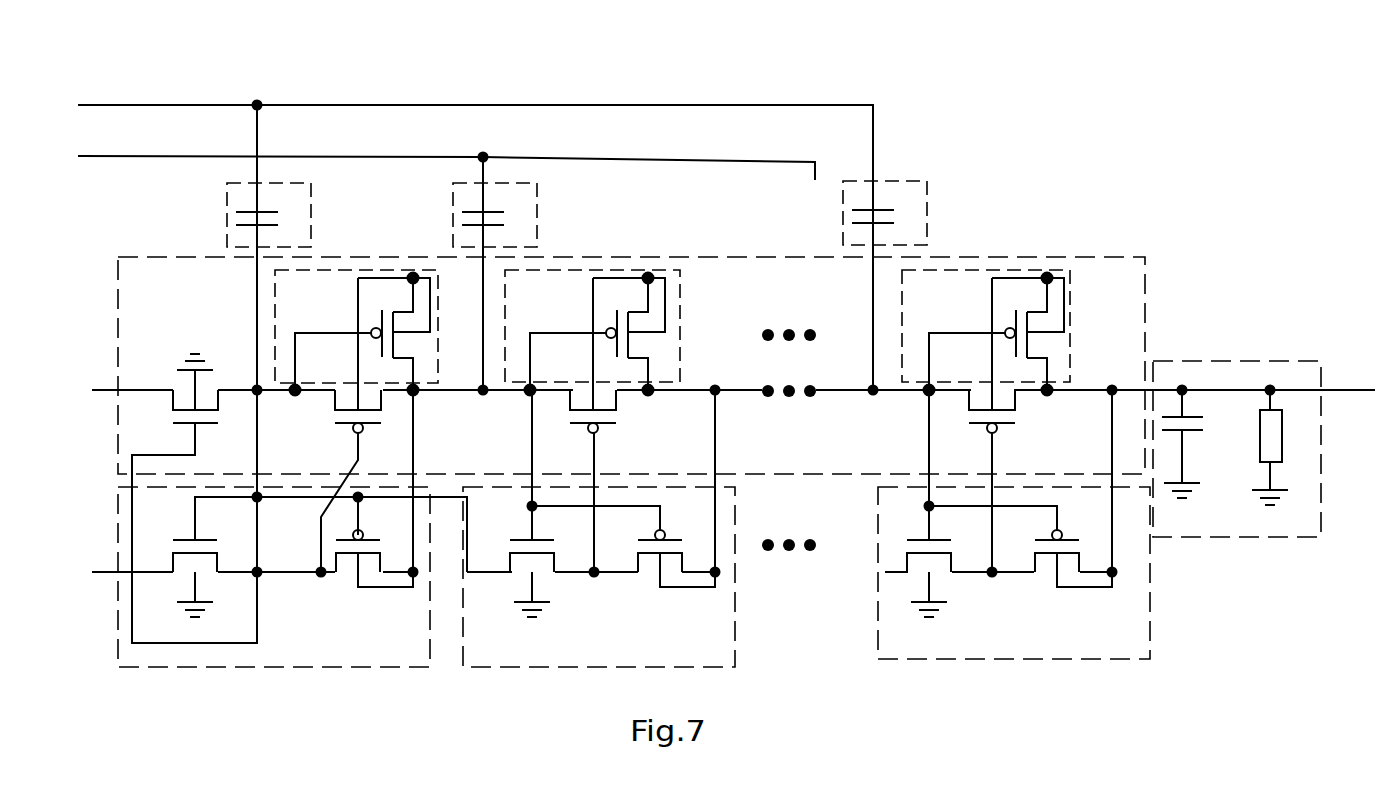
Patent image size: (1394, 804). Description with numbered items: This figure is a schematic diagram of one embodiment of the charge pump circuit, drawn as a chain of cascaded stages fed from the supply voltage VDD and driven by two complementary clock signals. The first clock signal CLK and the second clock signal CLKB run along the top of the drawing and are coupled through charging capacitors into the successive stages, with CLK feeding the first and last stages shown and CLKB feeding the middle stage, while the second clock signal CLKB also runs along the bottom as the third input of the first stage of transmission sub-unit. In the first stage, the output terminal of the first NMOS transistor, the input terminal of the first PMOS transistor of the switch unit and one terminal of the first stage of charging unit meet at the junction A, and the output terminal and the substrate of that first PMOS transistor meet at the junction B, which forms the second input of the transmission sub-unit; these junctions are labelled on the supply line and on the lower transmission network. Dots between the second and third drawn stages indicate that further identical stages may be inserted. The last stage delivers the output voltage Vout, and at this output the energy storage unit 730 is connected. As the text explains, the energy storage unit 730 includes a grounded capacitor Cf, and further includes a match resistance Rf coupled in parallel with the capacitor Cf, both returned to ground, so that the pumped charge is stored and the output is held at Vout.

The energy storage unit 730 is at (1237, 478).
The grounded capacitor Cf is at (1199, 442).
The match resistance Rf is at (1283, 445).
The first clock signal CLK is at (461, 328).
The second clock signal CLKB is at (418, 350).
The supply voltage VDD is at (706, 401).
The junction A is at (249, 403).
The junction B is at (368, 481).
The output voltage Vout is at (1349, 375).